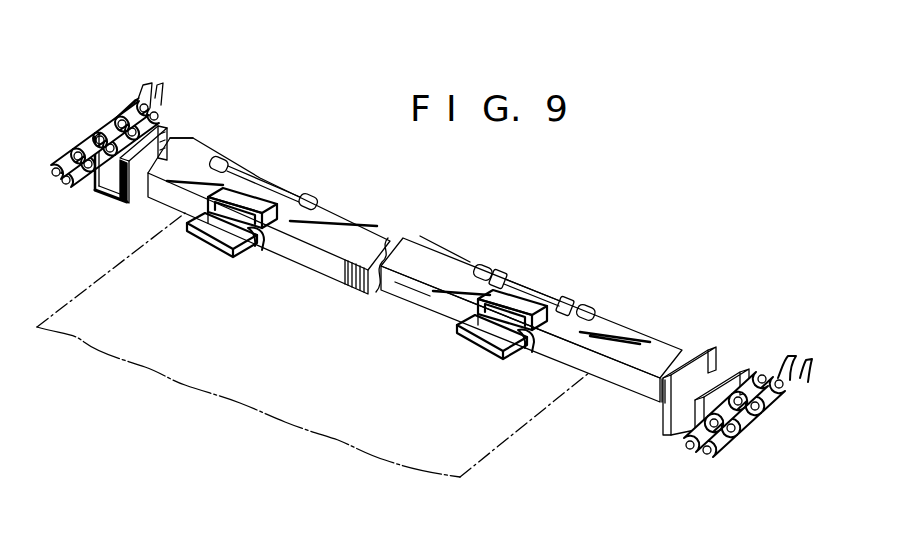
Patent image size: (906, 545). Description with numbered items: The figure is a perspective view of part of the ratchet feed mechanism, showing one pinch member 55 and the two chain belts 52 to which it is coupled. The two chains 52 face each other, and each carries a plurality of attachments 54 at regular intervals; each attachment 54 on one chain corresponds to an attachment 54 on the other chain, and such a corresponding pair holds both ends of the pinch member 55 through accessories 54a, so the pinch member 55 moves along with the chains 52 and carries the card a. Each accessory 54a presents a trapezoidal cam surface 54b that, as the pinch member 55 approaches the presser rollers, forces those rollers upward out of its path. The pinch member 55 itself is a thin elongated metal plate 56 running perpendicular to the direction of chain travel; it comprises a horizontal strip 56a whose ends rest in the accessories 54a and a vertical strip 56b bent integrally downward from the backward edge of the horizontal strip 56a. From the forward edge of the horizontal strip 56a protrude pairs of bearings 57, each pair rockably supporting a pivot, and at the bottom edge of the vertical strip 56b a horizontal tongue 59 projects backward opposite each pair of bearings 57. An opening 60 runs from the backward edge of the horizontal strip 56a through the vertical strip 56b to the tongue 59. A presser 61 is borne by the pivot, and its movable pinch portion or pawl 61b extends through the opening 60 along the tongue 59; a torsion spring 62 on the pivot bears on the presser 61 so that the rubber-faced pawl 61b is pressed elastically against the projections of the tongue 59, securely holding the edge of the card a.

The chain belt 52 is at (146, 100).
The attachment 54 is at (95, 170).
The accessory 54a is at (174, 147).
The trapezoidal cam surface 54b is at (164, 136).
The pinch member 55 is at (352, 266).
The thin elongated metal plate 56 is at (462, 272).
The horizontal strip 56a is at (437, 266).
The vertical strip 56b is at (410, 290).
The bearing 57 is at (218, 158).
The horizontal tongue 59 is at (257, 244).
The opening 60 is at (212, 222).
The presser 61 is at (217, 237).
The movable pinch portion or pawl 61b is at (227, 247).
The torsion spring 62 is at (232, 174).
The card a is at (528, 408).